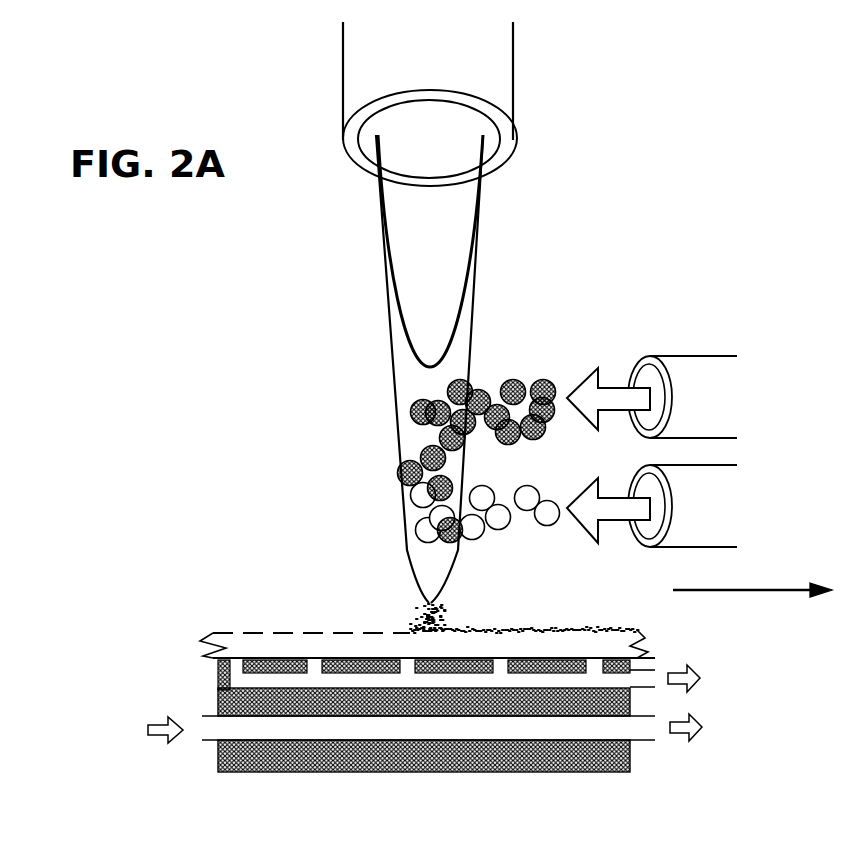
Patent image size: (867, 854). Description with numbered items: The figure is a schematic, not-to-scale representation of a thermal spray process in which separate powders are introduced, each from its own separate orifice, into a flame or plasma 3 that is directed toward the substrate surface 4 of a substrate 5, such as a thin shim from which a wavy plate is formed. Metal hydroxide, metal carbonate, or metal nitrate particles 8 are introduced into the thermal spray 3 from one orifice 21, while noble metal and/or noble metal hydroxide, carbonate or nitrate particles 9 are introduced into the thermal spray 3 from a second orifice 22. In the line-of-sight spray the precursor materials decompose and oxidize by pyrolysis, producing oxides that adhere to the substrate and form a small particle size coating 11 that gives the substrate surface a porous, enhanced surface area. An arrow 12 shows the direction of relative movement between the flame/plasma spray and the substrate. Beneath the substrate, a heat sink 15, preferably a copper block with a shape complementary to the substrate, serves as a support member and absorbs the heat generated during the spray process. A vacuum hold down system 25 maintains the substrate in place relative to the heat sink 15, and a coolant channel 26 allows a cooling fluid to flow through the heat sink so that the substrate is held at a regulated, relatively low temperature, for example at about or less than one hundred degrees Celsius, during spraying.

The flame or plasma 3 is at (393, 327).
The substrate surface 4 is at (253, 633).
The substrate 5 is at (363, 648).
The metal hydroxide, metal carbonate, or metal nitrate particles 8 is at (425, 530).
The noble metal particles 9 is at (427, 413).
The coating 11 is at (555, 628).
The arrow 12 is at (752, 610).
The heat sink 15 is at (240, 767).
The orifice 21 is at (734, 505).
The orifice 22 is at (742, 408).
The vacuum hold down system 25 is at (230, 674).
The coolant channel 26 is at (325, 730).